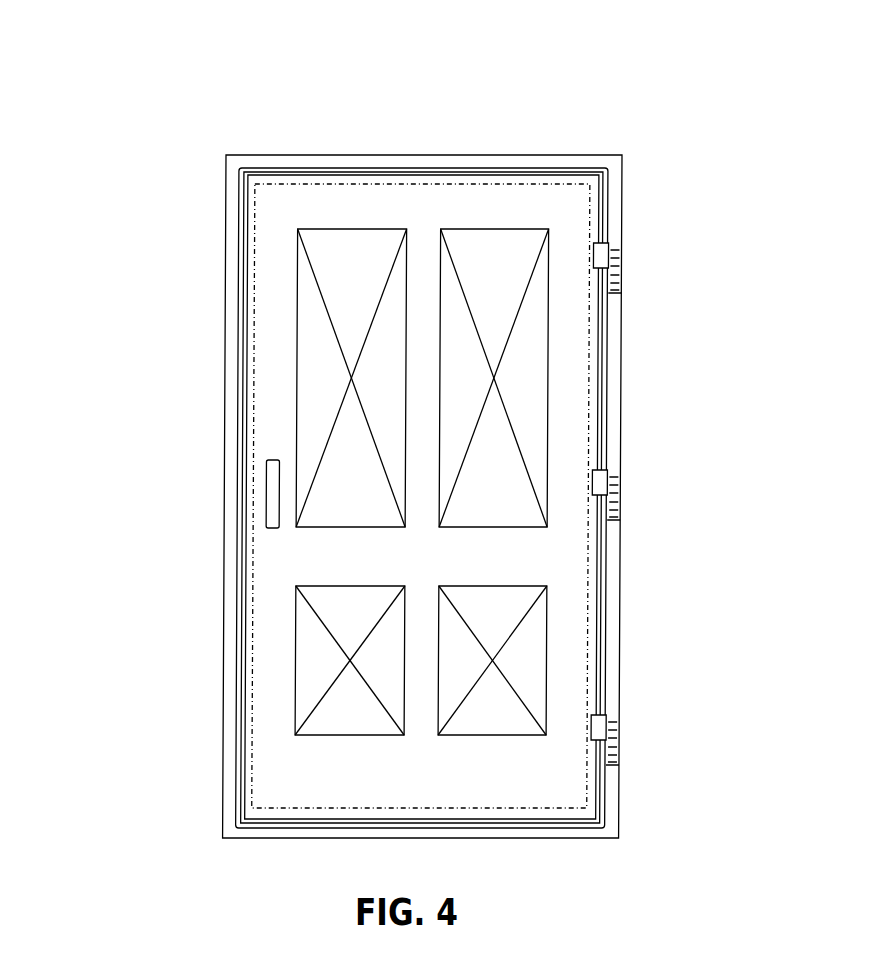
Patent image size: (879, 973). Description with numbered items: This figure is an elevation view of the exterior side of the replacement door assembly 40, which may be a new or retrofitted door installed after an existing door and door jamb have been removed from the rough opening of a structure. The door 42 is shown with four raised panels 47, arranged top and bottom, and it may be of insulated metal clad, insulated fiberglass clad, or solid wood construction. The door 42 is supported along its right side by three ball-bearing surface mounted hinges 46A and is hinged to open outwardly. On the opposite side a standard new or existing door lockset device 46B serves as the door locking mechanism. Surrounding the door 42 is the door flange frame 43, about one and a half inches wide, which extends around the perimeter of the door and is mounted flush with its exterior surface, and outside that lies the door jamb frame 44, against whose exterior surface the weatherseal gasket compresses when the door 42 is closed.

The replacement door assembly 40 is at (504, 148).
The door 42 is at (566, 211).
The door flange frame 43 is at (257, 273).
The door jamb frame 44 is at (622, 348).
The ball-bearing surface mounted hinge 46A is at (609, 483).
The door lockset device 46B is at (267, 493).
The raised panel 47 is at (320, 373).